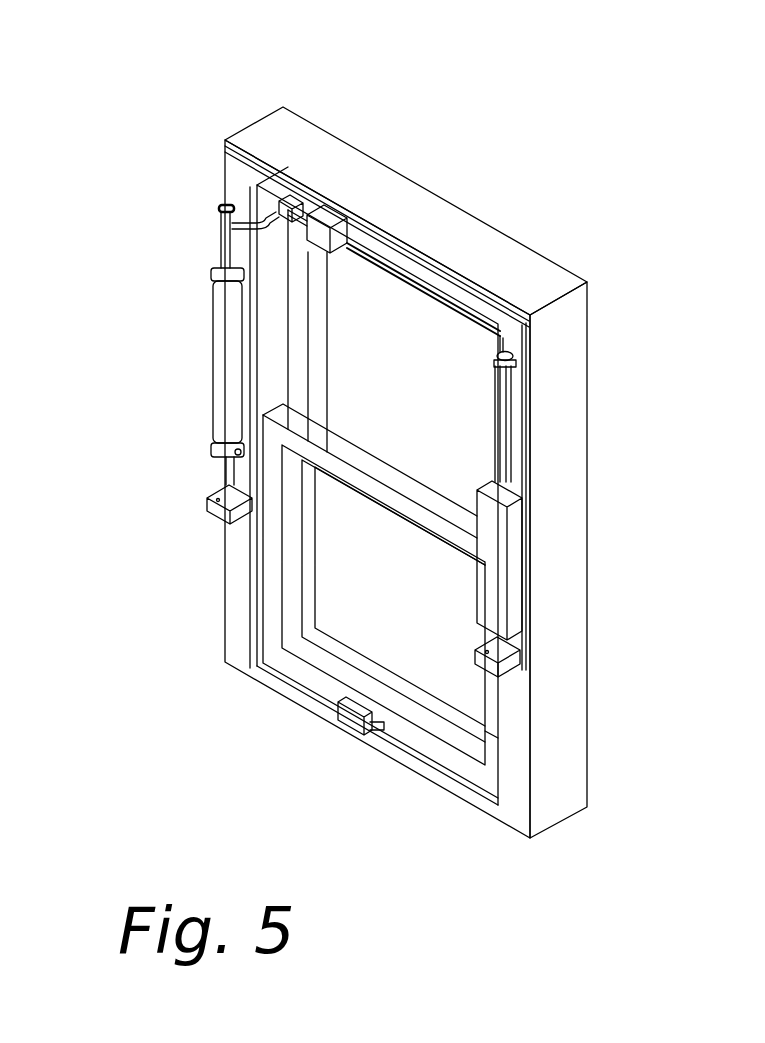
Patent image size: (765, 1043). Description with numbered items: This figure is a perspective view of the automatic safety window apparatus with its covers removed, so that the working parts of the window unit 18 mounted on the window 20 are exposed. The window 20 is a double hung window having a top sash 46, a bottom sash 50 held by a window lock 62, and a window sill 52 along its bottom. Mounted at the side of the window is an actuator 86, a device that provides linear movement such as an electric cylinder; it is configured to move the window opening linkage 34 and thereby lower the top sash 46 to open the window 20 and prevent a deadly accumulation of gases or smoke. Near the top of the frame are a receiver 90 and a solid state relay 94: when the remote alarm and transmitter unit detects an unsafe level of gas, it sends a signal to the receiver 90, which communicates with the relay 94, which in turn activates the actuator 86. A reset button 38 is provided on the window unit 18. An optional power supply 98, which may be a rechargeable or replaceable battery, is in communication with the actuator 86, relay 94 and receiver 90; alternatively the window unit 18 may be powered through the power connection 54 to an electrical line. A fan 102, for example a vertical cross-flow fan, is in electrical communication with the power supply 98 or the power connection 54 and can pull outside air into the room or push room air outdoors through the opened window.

The window unit 18 is at (248, 202).
The window 20 is at (467, 232).
The window opening linkage 34 is at (228, 228).
The reset button 38 is at (230, 197).
The top sash 46 is at (418, 348).
The bottom sash 50 is at (382, 612).
The window sill 52 is at (503, 805).
The power connection 54 is at (520, 672).
The window lock 62 is at (375, 747).
The actuator 86 is at (218, 355).
The receiver 90 is at (333, 197).
The solid state relay 94 is at (273, 203).
The power supply 98 is at (510, 560).
The fan 102 is at (515, 424).